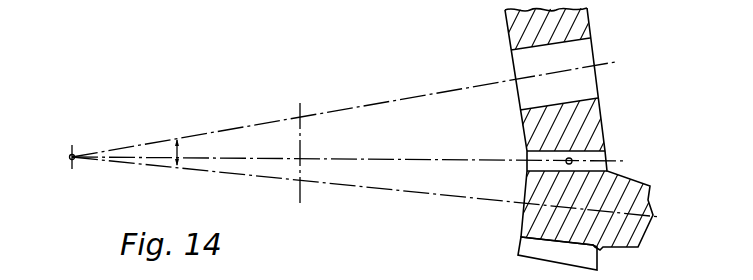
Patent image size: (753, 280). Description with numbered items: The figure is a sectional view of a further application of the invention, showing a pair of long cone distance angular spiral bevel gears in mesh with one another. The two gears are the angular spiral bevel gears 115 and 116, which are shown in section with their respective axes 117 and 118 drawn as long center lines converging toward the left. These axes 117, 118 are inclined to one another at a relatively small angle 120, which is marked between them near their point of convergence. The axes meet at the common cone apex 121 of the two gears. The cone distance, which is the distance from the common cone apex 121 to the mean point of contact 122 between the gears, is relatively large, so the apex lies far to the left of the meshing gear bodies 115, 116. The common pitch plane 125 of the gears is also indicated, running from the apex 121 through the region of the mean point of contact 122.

The angular spiral bevel gear 115 is at (604, 123).
The angular spiral bevel gear 116 is at (605, 249).
The axis 117 is at (412, 96).
The axis 118 is at (441, 199).
The angle 120 is at (180, 152).
The common cone apex 121 is at (68, 158).
The mean point of contact 122 is at (565, 160).
The common pitch plane 125 is at (413, 158).